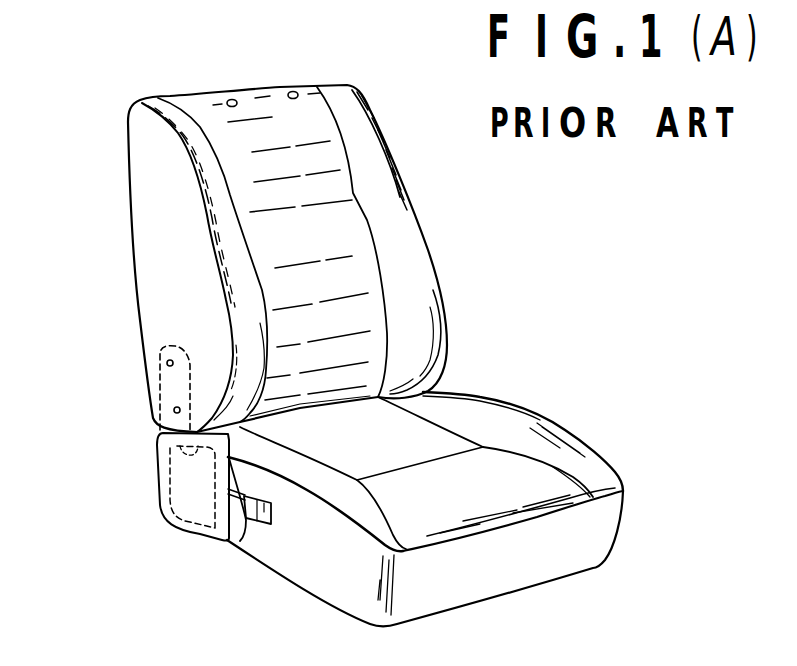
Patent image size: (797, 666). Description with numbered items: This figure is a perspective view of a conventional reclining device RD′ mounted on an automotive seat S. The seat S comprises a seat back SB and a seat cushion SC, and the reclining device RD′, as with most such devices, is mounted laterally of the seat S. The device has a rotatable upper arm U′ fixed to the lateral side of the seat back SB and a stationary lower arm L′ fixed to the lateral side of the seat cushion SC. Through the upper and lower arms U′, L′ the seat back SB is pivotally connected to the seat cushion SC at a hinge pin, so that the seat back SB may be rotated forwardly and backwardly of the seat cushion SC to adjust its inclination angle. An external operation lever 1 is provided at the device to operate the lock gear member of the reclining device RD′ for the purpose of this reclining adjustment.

The automotive seat S is at (547, 263).
The seat back SB is at (133, 260).
The seat cushion SC is at (543, 411).
The rotatable upper arm U′ is at (163, 386).
The stationary lower arm L′ is at (163, 510).
The reclining device RD′ is at (123, 503).
The operation lever 1 is at (240, 503).